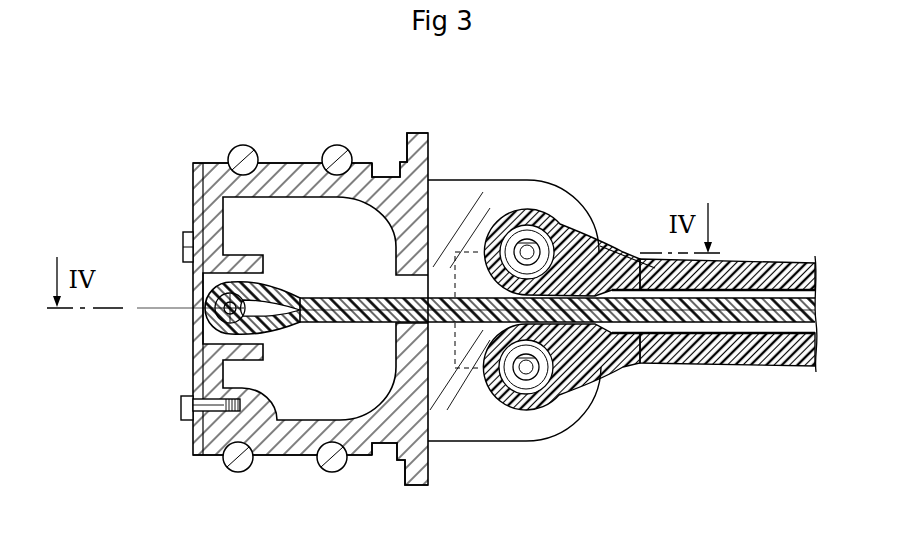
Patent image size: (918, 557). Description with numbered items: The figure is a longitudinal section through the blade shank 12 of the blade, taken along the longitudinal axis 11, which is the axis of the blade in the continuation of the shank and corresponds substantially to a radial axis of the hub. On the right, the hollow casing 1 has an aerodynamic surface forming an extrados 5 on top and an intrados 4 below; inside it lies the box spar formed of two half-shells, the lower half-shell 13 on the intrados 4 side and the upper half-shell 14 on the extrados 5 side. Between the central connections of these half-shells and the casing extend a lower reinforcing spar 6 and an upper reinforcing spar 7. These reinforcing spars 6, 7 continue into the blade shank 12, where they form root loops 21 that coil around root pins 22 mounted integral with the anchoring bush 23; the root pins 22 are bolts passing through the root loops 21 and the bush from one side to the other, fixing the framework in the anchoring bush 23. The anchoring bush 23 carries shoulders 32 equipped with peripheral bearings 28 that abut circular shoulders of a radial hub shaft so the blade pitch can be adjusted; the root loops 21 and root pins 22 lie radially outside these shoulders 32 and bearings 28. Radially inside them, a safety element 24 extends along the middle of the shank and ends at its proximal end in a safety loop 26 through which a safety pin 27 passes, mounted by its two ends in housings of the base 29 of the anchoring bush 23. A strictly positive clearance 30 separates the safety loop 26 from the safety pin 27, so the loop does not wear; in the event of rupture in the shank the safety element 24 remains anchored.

The hollow casing 1 is at (649, 316).
The intrados 4 is at (803, 374).
The extrados 5 is at (803, 256).
The lower reinforcing spar 6 is at (660, 360).
The upper reinforcing spar 7 is at (657, 272).
The longitudinal axis 11 is at (150, 300).
The blade shank 12 is at (562, 151).
The lower half-shell 13 is at (712, 335).
The upper half-shell 14 is at (717, 290).
The root loops 21 is at (536, 206).
The root pins 22 is at (527, 250).
The anchoring bush 23 is at (380, 174).
The safety element 24 is at (610, 290).
The safety loop 26 is at (207, 298).
The safety pin 27 is at (212, 336).
The peripheral bearings 28 is at (243, 160).
The base of the anchoring bush 29 is at (183, 398).
The clearance 30 is at (214, 319).
The shoulders 32 is at (217, 163).